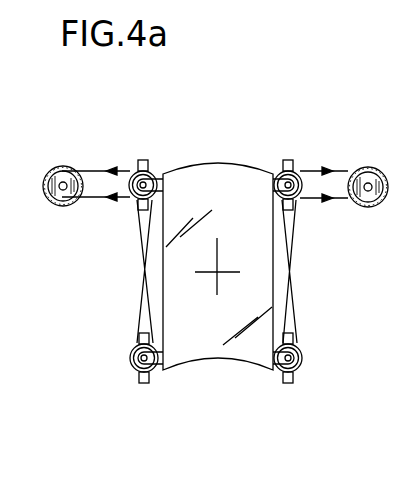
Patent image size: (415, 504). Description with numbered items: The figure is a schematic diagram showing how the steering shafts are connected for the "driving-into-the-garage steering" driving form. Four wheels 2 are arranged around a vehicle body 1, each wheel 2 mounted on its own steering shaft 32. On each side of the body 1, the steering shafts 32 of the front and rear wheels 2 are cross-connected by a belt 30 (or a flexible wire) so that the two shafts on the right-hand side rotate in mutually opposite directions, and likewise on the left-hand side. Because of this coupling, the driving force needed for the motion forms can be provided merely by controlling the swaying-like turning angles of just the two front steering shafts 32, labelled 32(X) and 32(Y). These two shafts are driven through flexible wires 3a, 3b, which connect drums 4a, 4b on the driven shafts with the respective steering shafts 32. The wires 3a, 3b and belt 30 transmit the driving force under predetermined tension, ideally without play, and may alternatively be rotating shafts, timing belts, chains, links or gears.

The vehicle body 1 is at (233, 293).
The wheel 2 is at (150, 168).
The flexible wire 3a is at (121, 170).
The flexible wire 3b is at (343, 170).
The drum 4a is at (60, 206).
The drum 4b is at (368, 207).
The belt 30 is at (140, 300).
The steering shaft 32 is at (365, 368).